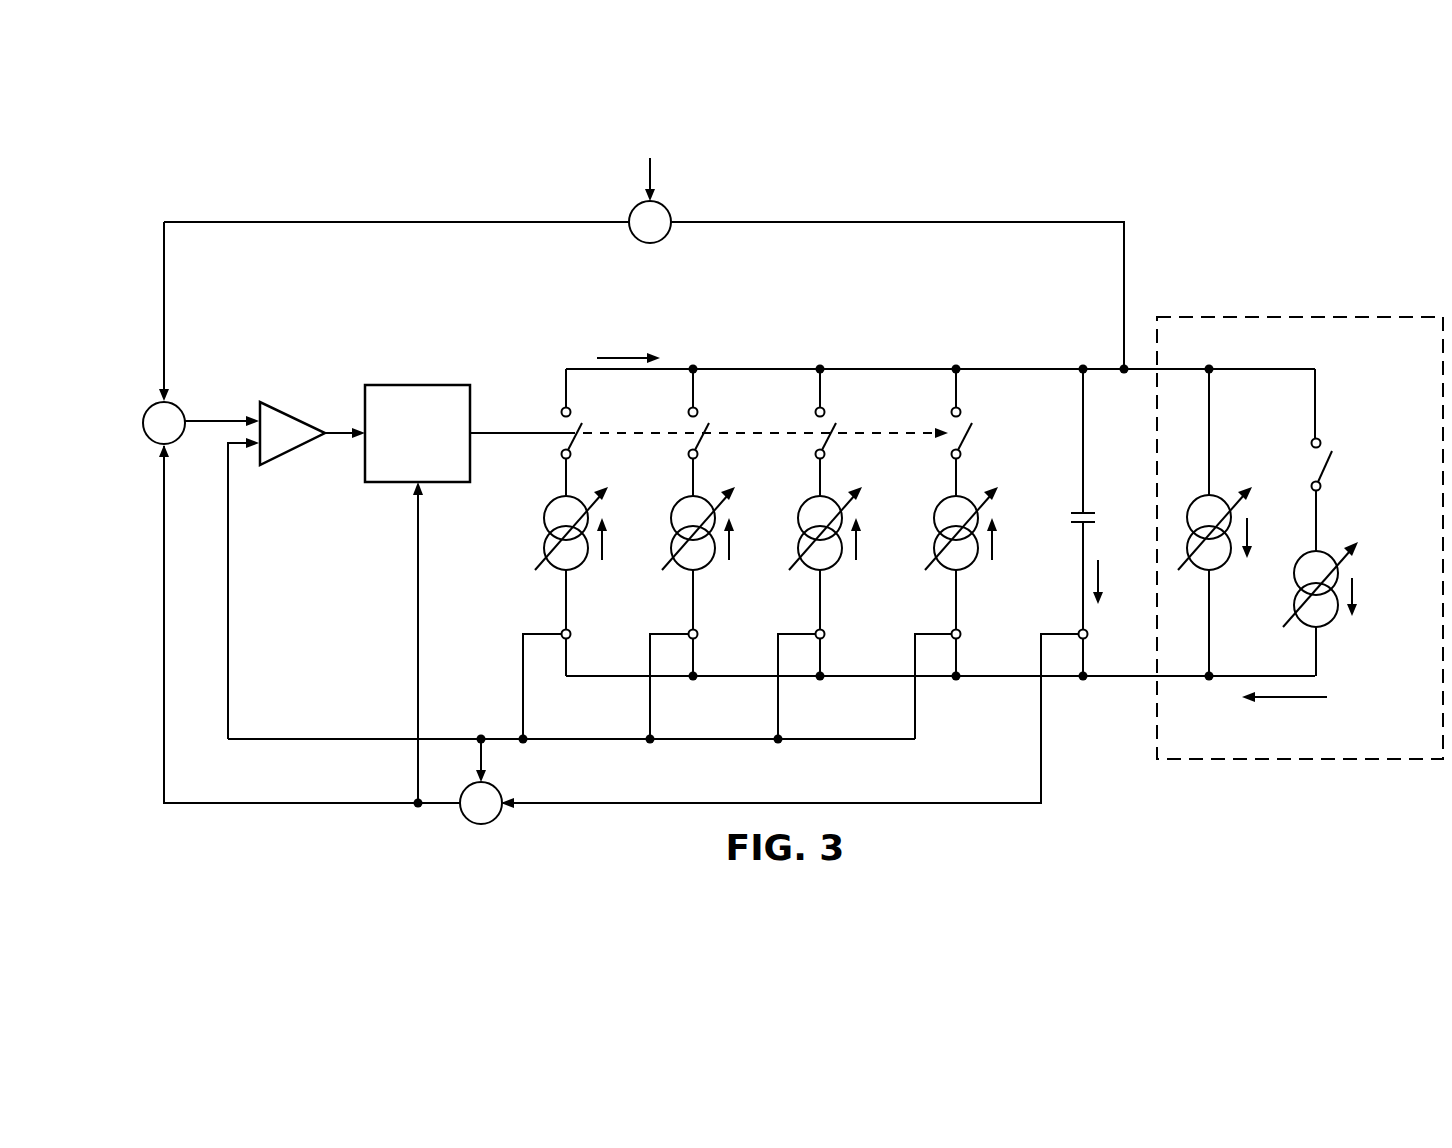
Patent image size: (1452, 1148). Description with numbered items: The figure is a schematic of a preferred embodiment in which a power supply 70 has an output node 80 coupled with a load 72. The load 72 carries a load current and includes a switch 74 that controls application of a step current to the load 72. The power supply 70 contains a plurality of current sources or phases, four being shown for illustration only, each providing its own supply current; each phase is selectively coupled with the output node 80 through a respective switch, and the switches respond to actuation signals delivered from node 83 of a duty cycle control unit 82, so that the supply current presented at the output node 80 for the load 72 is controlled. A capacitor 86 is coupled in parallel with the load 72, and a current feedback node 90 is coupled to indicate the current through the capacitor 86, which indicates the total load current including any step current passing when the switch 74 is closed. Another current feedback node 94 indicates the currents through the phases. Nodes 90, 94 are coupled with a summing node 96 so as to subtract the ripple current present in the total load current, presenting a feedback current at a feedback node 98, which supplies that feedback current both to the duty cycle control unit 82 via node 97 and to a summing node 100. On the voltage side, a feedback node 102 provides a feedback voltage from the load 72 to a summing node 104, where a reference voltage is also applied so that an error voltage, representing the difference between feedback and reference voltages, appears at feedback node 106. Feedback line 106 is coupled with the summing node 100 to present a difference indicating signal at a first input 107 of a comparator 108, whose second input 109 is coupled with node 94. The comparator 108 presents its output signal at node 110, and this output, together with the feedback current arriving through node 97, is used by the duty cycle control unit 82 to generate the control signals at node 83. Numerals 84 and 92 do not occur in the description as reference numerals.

The power supply 70 is at (1094, 190).
The load 72 is at (1338, 312).
The switch 74 is at (1308, 460).
The output node 80 is at (960, 366).
The duty cycle control unit 82 is at (387, 484).
The node 83 is at (523, 436).
The phase current sources 84 is at (880, 436).
The capacitor 86 is at (1068, 517).
The current feedback node 90 is at (1041, 691).
The phase current sense paths 92 is at (753, 657).
The current feedback node 94 is at (503, 736).
The summing node 96 is at (480, 826).
The node 97 is at (416, 634).
The feedback node 98 is at (441, 808).
The summing node 100 is at (179, 444).
The feedback node 102 is at (874, 228).
The summing node 104 is at (650, 244).
The feedback node 106 is at (492, 225).
The first input 107 is at (206, 420).
The comparator 108 is at (292, 418).
The second input 109 is at (230, 497).
The node 110 is at (333, 436).